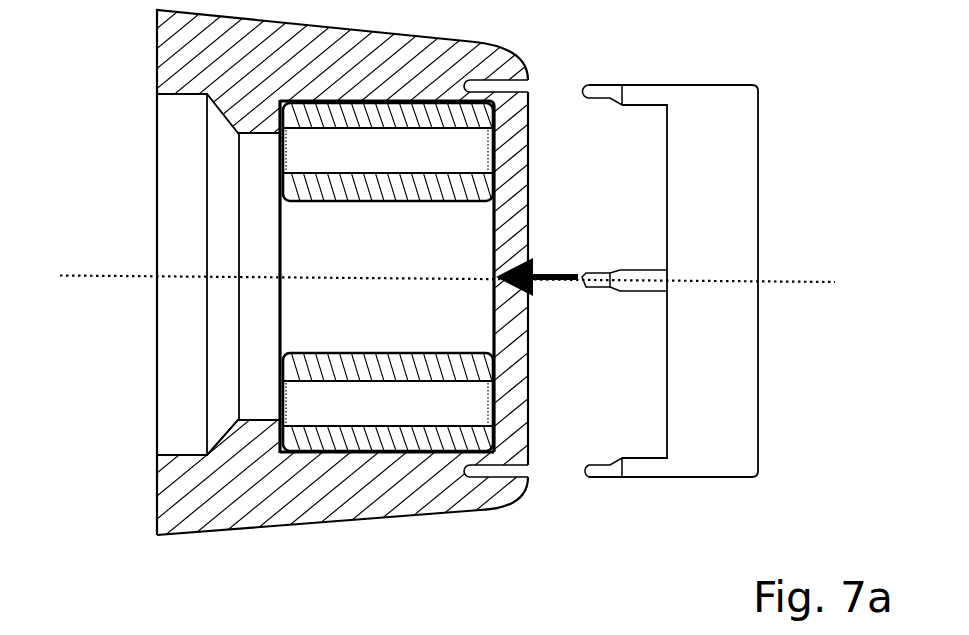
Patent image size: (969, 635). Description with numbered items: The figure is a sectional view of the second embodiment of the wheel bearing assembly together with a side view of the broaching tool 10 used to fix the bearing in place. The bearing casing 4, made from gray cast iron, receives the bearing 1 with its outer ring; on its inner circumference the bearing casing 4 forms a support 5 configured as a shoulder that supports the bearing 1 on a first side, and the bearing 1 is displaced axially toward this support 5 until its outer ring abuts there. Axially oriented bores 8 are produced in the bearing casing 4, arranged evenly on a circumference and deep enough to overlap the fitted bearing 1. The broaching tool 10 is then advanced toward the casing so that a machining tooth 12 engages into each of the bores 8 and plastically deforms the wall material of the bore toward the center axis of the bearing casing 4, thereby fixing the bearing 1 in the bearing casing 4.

The bearing 1 is at (360, 399).
The bearing casing 4 is at (185, 53).
The support 5 is at (233, 473).
The bores 8 is at (510, 470).
The press tool 10 is at (727, 187).
The machining tooth 12 is at (603, 470).